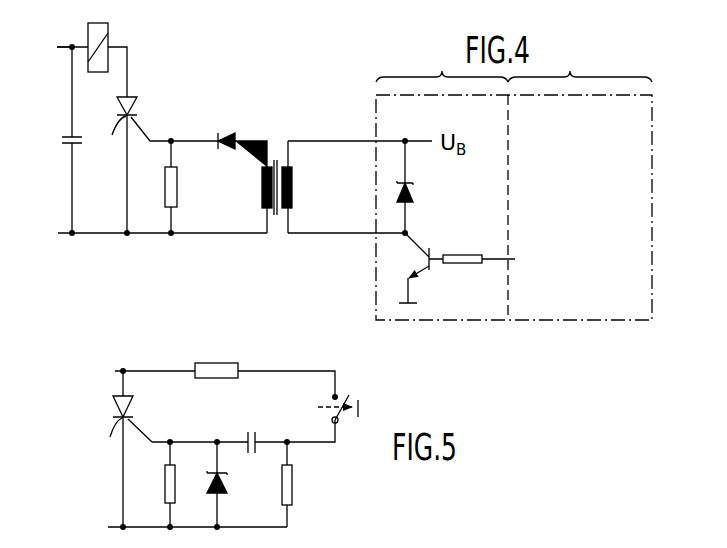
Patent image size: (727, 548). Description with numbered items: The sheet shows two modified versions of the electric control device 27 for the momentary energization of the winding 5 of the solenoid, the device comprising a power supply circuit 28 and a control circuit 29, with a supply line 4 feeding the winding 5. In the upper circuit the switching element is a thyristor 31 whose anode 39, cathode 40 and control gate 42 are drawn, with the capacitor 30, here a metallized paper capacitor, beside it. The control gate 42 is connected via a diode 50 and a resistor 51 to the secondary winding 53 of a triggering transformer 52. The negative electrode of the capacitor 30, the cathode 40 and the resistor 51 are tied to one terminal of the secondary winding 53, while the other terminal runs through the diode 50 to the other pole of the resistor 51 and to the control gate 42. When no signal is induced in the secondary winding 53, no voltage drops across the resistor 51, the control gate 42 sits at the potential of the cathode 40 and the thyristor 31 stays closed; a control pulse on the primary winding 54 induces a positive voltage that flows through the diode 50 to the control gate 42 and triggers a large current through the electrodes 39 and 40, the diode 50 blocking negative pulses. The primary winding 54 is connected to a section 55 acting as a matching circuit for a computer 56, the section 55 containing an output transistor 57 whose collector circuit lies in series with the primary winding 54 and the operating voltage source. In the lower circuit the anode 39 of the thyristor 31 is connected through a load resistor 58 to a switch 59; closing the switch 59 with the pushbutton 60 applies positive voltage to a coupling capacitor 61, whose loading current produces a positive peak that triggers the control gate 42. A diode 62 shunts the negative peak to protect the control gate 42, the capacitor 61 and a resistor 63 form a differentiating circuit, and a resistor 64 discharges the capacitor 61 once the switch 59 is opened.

In FIG. 4, the supply terminal line 4 is at (78, 45).
In FIG. 4, the winding 5 is at (105, 26).
In FIG. 4, the control device 27 is at (306, 53).
In FIG. 5, the control device 27 is at (283, 358).
In FIG. 4, the power supply circuit 28 is at (93, 237).
In FIG. 5, the power supply circuit 28 is at (120, 483).
In FIG. 4, the control circuit 29 is at (312, 139).
In FIG. 5, the control circuit 29 is at (325, 370).
In FIG. 4, the capacitor 30 is at (66, 152).
In FIG. 4, the thyristor 31 is at (137, 88).
In FIG. 5, the thyristor 31 is at (117, 389).
In FIG. 4, the anode 39 is at (116, 101).
In FIG. 5, the anode 39 is at (112, 401).
In FIG. 4, the cathode 40 is at (112, 137).
In FIG. 5, the cathode 40 is at (106, 433).
In FIG. 4, the control gate 42 is at (143, 130).
In FIG. 5, the control gate 42 is at (140, 430).
In FIG. 4, the diode 50 is at (229, 130).
In FIG. 4, the resistor 51 is at (178, 184).
In FIG. 4, the triggering transformer 52 is at (278, 237).
In FIG. 4, the secondary winding 53 is at (262, 187).
In FIG. 4, the primary winding 54 is at (293, 192).
In FIG. 4, the computer section 55 is at (514, 182).
In FIG. 4, the computer 56 is at (580, 182).
In FIG. 4, the output transistor 57 is at (431, 283).
In FIG. 5, the load resistor 58 is at (212, 363).
In FIG. 5, the switch 59 is at (340, 421).
In FIG. 5, the pushbutton 60 is at (362, 403).
In FIG. 5, the coupling capacitor 61 is at (258, 437).
In FIG. 5, the diode 62 is at (227, 484).
In FIG. 5, the resistor 63 is at (165, 485).
In FIG. 5, the resistor 64 is at (292, 495).